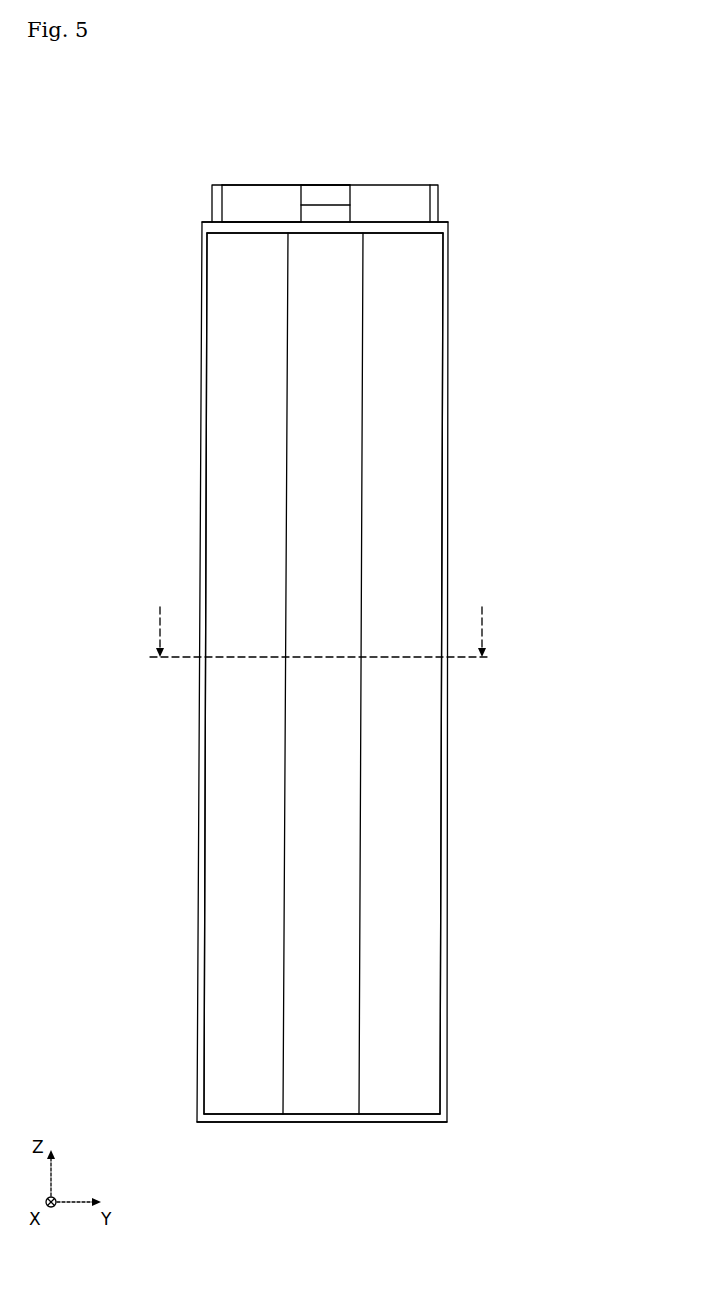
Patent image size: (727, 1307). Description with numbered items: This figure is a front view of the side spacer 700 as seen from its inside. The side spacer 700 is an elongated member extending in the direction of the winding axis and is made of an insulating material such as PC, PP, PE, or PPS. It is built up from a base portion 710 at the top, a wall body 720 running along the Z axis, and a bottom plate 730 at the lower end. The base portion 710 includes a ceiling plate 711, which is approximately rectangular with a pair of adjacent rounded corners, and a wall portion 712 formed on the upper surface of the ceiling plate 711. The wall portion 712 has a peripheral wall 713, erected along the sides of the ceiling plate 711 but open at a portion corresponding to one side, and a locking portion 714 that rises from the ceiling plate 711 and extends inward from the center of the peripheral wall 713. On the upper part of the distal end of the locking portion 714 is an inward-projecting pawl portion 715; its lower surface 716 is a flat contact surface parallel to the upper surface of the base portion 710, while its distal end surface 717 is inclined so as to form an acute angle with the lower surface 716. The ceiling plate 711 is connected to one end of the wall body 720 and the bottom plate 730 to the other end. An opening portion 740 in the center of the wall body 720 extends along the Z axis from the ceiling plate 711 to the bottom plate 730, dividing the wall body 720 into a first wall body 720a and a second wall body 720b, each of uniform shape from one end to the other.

The side spacer 700 is at (492, 112).
The base portion 710 is at (462, 195).
The ceiling plate 711 is at (420, 228).
The wall portion 712 is at (115, 112).
The peripheral wall 713 is at (235, 195).
The locking portion 714 is at (290, 190).
The pawl portion 715 is at (342, 170).
The lower surface 716 is at (350, 205).
The distal end surface 717 is at (307, 188).
The wall body 720 is at (330, 673).
The first wall body 720a is at (238, 428).
The second wall body 720b is at (420, 424).
The bottom plate 730 is at (405, 1120).
The opening portion 740 is at (287, 352).